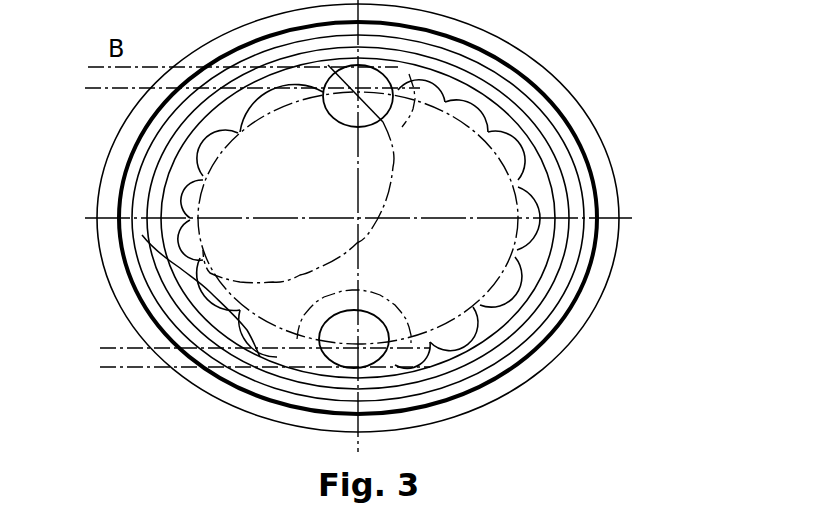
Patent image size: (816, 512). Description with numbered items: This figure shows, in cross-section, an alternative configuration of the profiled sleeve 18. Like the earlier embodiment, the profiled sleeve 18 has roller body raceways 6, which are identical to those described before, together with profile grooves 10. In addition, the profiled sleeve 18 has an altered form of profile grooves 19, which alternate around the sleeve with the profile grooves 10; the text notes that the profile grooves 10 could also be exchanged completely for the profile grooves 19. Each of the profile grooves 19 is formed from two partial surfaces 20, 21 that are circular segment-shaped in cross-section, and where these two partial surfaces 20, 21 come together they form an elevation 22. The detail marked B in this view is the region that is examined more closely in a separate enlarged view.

The profiled sleeve 18 is at (622, 82).
The profile grooves 10 is at (537, 212).
The roller body raceways 6 is at (505, 282).
The profile grooves 19 is at (450, 341).
The partial surface 20 is at (182, 200).
The partial surface 21 is at (190, 245).
The elevation 22 is at (142, 235).